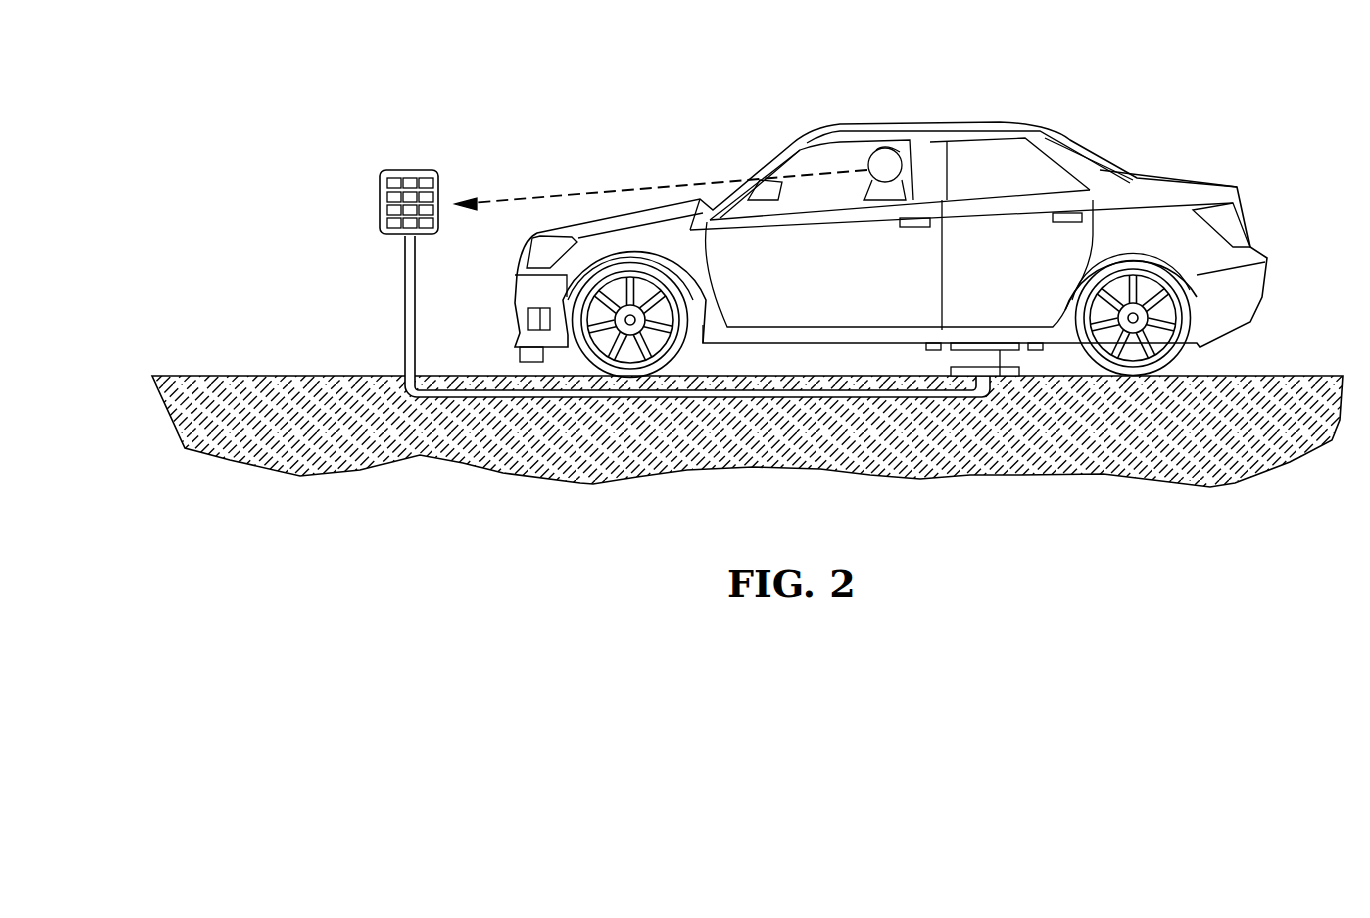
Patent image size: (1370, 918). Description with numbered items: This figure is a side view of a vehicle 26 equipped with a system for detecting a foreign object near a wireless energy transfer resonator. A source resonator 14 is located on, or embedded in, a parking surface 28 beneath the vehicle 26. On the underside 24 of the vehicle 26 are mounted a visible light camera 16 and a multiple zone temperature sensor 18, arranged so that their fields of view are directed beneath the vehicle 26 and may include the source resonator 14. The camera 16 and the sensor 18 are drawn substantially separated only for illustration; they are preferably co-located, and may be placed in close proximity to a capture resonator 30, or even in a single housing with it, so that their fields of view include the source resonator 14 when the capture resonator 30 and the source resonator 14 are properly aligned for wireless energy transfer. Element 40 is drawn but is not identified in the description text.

The source resonator 14 is at (975, 377).
The visible light camera 16 is at (405, 257).
The multiple zone temperature sensor 18 is at (930, 349).
The underside 24 is at (735, 345).
The vehicle 26 is at (1060, 138).
The parking surface 28 is at (1308, 375).
The capture resonator 30 is at (1000, 352).
The front sensor 40 is at (527, 362).